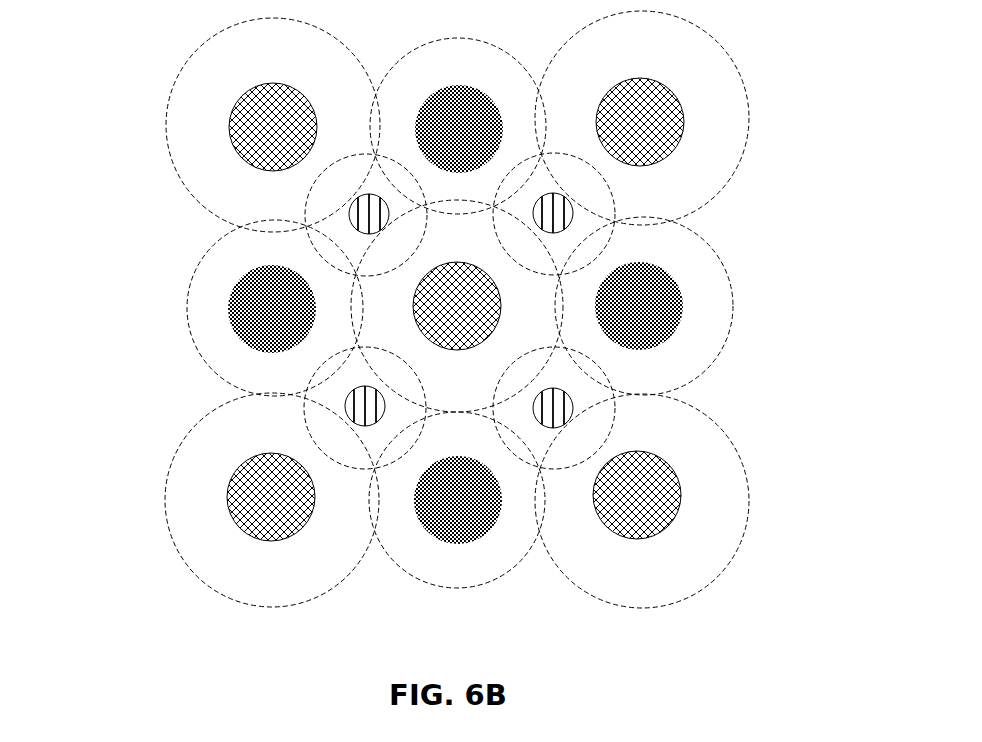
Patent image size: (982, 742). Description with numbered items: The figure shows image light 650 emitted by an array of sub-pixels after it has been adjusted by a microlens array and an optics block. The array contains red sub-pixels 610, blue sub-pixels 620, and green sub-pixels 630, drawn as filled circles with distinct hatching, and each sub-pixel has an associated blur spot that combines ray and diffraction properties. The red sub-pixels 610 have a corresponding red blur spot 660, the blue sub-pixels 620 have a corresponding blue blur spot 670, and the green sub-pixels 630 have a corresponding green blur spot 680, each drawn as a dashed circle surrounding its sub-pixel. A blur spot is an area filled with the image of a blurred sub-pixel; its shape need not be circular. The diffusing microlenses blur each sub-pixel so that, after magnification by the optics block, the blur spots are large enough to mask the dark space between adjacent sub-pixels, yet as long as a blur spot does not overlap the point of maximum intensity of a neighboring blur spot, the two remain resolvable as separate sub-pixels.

The image light 650 is at (73, 50).
The red sub-pixels 610 is at (232, 116).
The blue sub-pixels 620 is at (232, 300).
The green sub-pixels 630 is at (345, 402).
The red blur spot 660 is at (658, 14).
The blue blur spot 670 is at (713, 252).
The green blur spot 680 is at (610, 417).